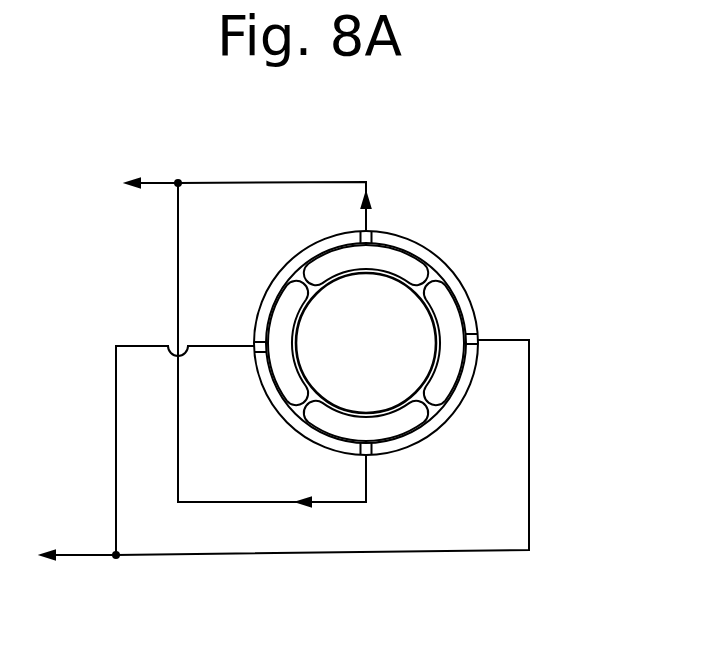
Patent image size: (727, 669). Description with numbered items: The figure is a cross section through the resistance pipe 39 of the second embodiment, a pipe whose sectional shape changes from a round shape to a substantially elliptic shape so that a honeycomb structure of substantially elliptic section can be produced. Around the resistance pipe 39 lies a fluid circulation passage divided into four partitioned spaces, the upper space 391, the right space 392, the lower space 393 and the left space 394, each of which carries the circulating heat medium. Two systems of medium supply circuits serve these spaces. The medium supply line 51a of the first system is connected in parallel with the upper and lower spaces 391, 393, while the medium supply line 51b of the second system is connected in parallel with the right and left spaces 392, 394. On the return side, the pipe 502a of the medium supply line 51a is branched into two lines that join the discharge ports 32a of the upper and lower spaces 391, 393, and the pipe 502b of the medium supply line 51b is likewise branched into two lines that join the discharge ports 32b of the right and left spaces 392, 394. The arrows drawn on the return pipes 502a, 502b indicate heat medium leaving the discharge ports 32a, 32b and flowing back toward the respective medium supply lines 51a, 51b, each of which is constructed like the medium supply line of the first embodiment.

The resistance pipe 39 is at (445, 250).
The upper space 391 is at (391, 251).
The right space 392 is at (437, 298).
The lower space 393 is at (395, 414).
The left space 394 is at (274, 299).
The discharge port 32a is at (361, 227).
The discharge port 32b is at (460, 327).
The pipe on return port side 502a is at (160, 181).
The pipe on return port side 502b is at (96, 544).
The medium supply line 51a is at (148, 162).
The medium supply line 51b is at (66, 564).